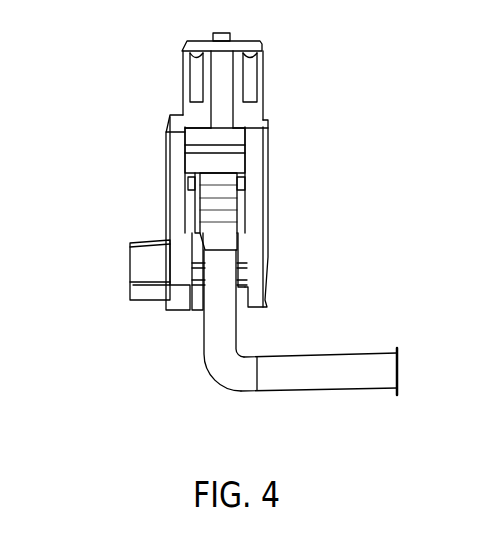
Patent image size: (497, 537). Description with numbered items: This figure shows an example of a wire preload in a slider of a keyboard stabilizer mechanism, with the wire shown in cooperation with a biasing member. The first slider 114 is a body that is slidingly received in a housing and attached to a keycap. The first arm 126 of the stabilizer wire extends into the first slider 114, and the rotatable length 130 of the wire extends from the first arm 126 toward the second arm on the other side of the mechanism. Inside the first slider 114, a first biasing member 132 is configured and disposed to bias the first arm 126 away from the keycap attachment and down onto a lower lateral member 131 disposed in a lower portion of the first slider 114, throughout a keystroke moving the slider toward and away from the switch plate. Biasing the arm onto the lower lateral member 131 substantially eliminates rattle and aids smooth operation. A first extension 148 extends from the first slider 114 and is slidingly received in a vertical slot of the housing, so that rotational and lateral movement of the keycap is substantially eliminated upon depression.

The first slider 114 is at (268, 147).
The first biasing member 132 is at (242, 197).
The lower lateral member 131 is at (243, 274).
The first extension 148 is at (145, 266).
The first arm 126 is at (215, 327).
The rotatable length 130 is at (328, 389).